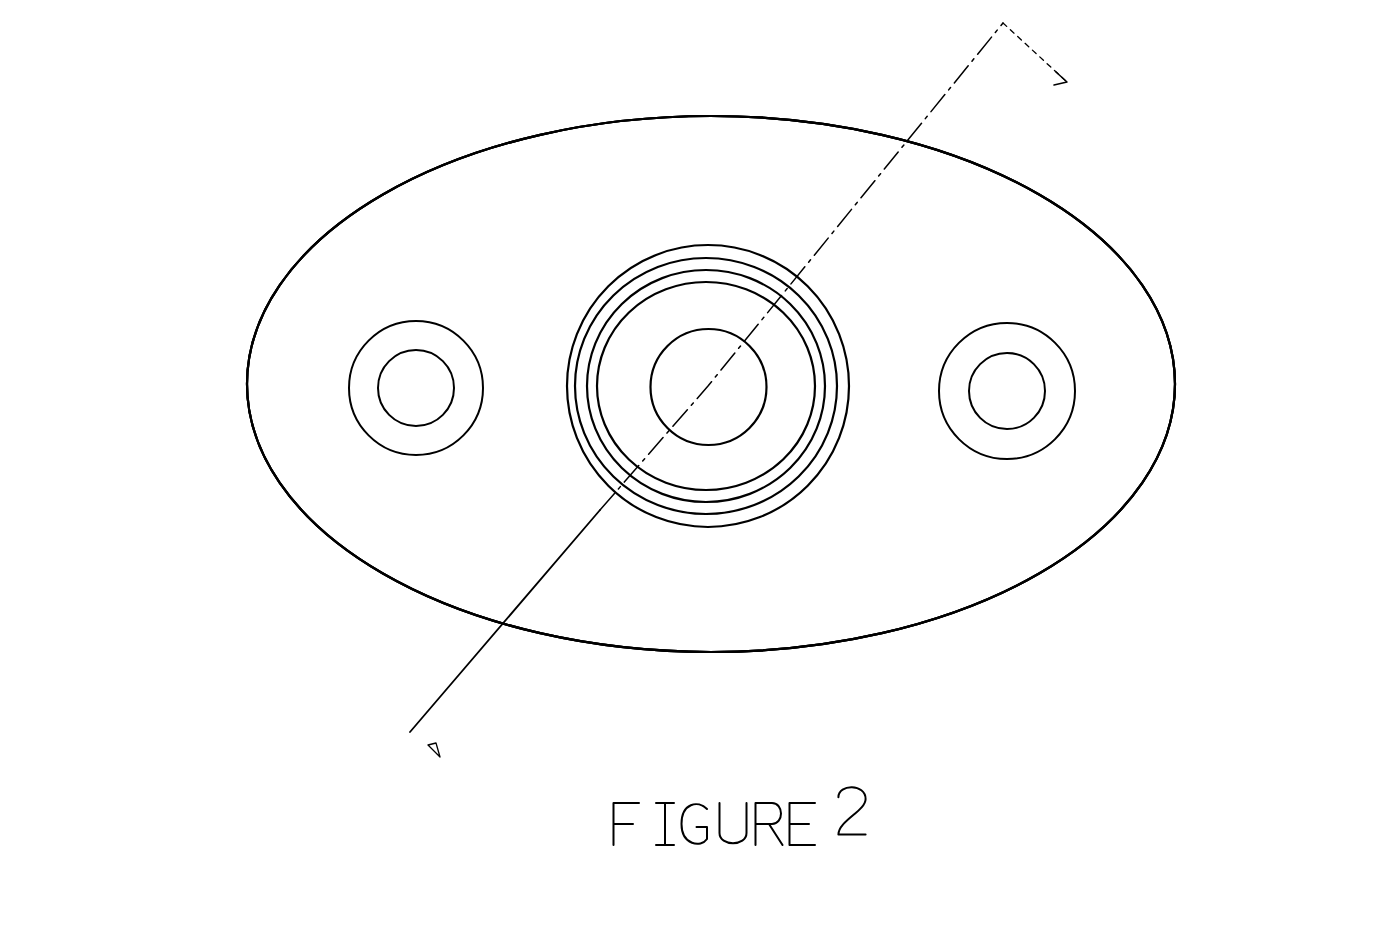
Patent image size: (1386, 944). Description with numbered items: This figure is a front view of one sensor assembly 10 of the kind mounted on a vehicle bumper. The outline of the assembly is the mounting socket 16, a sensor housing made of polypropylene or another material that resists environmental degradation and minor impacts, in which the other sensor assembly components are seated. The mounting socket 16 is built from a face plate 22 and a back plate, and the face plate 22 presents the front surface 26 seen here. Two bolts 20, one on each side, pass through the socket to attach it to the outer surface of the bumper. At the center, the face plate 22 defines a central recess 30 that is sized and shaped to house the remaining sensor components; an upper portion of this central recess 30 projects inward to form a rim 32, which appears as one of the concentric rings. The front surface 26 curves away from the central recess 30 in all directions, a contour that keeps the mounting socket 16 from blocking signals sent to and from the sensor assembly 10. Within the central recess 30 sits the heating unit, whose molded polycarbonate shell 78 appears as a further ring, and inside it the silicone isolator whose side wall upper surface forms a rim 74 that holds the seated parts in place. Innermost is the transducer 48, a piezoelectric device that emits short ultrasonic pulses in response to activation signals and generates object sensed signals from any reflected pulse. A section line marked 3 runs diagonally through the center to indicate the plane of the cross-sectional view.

The sensor assembly 10 is at (1103, 167).
The mounting socket 16 is at (1172, 313).
The bolts 20 is at (1202, 508).
The face plate 22 is at (1165, 683).
The front surface 26 is at (612, 597).
The central recess 30 is at (764, 512).
The rim 32 is at (587, 447).
The transducer 48 is at (940, 643).
The rim 74 is at (618, 330).
The shell 78 is at (587, 363).
The section line 3- 3 is at (755, 414).